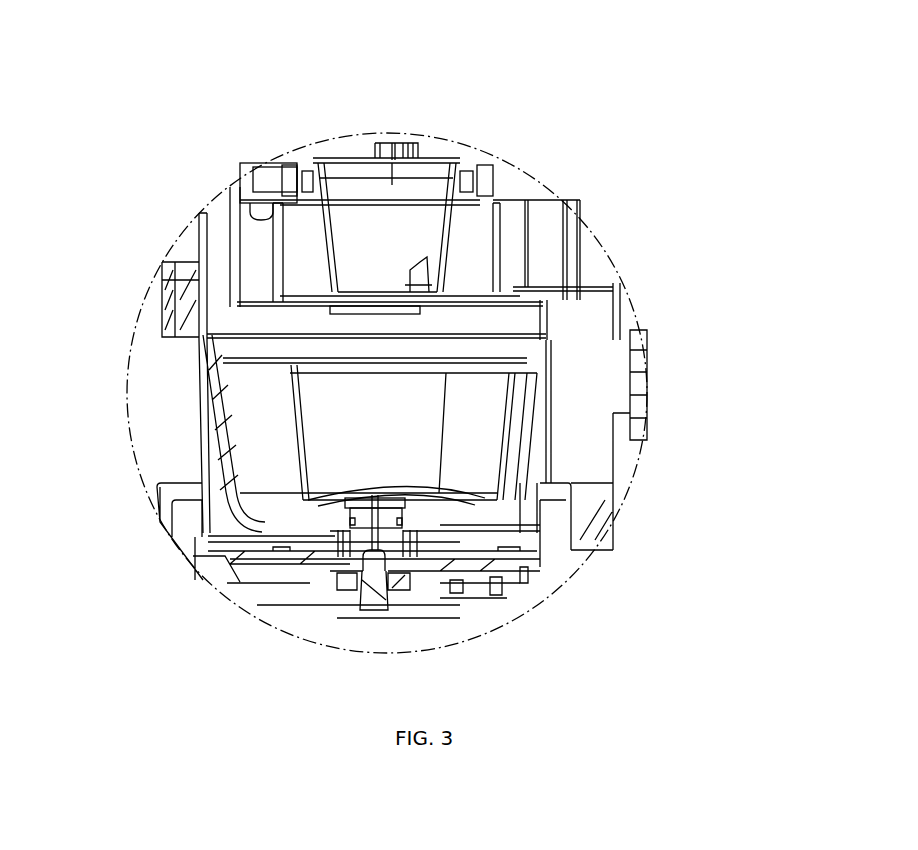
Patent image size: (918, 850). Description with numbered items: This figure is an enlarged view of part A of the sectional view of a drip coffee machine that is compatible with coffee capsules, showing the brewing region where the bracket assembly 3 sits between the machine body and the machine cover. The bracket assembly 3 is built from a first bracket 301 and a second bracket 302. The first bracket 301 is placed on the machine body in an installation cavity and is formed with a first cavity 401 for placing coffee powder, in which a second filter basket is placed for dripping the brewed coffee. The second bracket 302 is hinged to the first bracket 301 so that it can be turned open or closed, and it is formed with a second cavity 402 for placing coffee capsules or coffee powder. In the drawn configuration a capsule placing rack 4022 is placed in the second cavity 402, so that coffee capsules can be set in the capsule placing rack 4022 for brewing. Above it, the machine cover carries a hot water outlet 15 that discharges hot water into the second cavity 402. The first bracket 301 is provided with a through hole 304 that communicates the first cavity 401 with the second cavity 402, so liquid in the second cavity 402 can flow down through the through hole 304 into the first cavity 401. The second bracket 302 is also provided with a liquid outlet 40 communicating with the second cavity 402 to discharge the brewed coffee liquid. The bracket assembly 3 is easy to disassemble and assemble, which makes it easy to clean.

The hot water outlet 15 is at (388, 164).
The capsule placing rack 4022 is at (456, 224).
The second cavity 402 is at (300, 270).
The first cavity 401 is at (265, 430).
The part a A is at (567, 212).
The through hole 304 is at (505, 290).
The second bracket 302 is at (293, 230).
The first bracket 301 is at (528, 466).
The bracket assembly 3 is at (780, 508).
The liquid outlet 40 is at (400, 583).